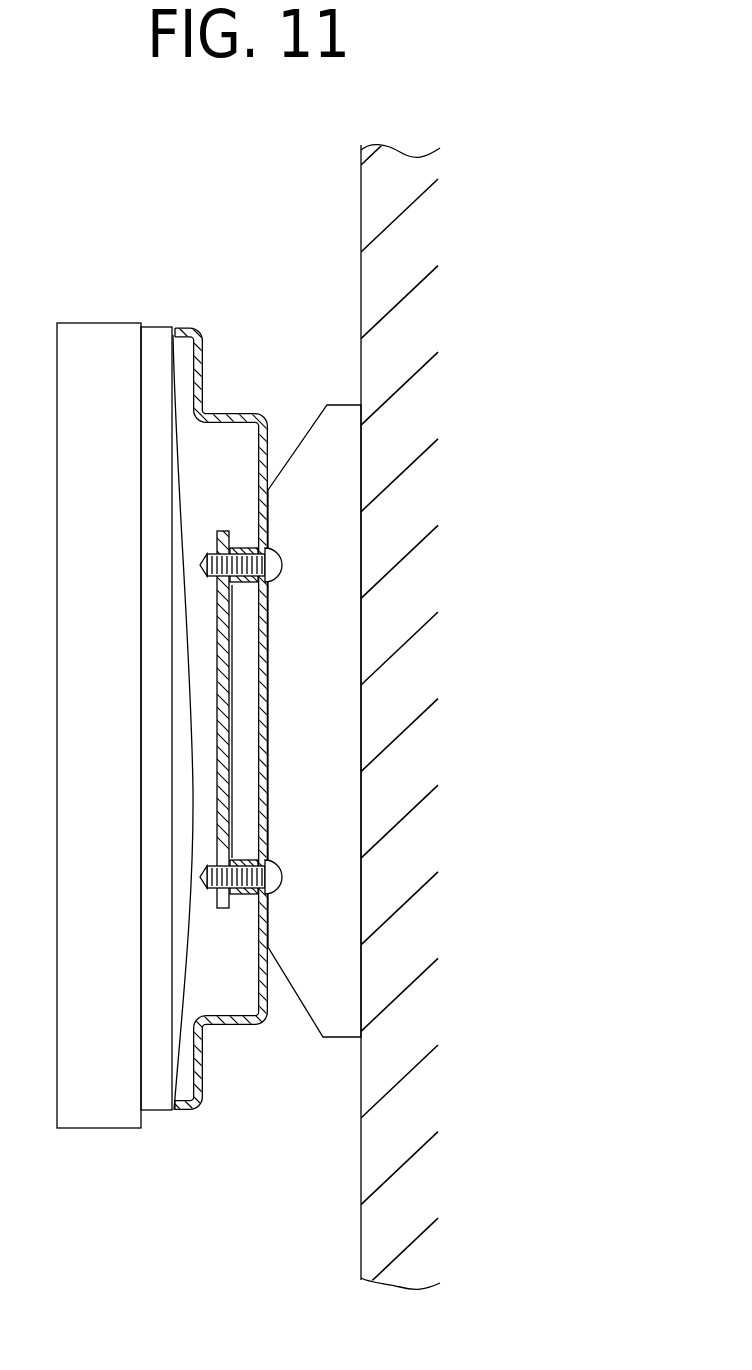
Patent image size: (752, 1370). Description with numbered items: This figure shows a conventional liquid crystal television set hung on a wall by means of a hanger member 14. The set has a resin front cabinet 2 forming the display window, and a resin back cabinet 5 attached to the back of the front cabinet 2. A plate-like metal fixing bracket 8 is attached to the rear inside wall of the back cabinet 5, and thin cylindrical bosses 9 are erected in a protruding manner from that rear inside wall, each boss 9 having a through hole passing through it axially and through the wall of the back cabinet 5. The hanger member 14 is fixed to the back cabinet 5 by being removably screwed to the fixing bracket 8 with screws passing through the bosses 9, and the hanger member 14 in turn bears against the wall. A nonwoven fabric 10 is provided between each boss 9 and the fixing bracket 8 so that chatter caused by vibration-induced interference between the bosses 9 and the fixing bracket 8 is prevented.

The front cabinet 2 is at (92, 322).
The back cabinet 5 is at (163, 323).
The fixing bracket 8 is at (228, 531).
The boss 9 is at (245, 547).
The nonwoven fabric 10 is at (240, 895).
The hanger member 14 is at (343, 400).